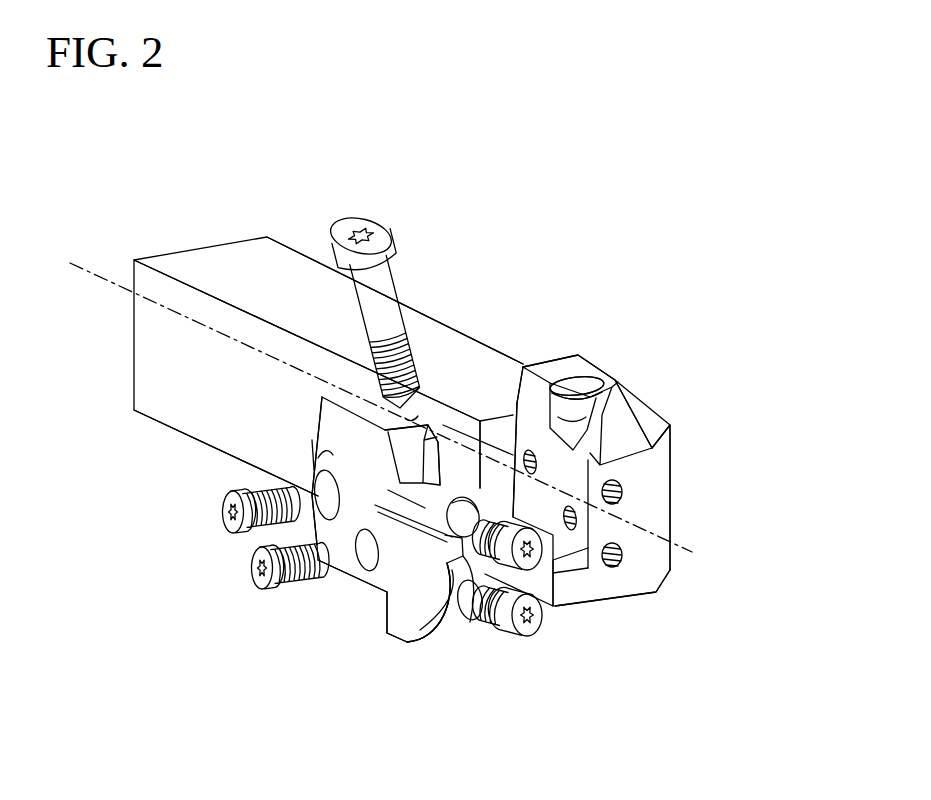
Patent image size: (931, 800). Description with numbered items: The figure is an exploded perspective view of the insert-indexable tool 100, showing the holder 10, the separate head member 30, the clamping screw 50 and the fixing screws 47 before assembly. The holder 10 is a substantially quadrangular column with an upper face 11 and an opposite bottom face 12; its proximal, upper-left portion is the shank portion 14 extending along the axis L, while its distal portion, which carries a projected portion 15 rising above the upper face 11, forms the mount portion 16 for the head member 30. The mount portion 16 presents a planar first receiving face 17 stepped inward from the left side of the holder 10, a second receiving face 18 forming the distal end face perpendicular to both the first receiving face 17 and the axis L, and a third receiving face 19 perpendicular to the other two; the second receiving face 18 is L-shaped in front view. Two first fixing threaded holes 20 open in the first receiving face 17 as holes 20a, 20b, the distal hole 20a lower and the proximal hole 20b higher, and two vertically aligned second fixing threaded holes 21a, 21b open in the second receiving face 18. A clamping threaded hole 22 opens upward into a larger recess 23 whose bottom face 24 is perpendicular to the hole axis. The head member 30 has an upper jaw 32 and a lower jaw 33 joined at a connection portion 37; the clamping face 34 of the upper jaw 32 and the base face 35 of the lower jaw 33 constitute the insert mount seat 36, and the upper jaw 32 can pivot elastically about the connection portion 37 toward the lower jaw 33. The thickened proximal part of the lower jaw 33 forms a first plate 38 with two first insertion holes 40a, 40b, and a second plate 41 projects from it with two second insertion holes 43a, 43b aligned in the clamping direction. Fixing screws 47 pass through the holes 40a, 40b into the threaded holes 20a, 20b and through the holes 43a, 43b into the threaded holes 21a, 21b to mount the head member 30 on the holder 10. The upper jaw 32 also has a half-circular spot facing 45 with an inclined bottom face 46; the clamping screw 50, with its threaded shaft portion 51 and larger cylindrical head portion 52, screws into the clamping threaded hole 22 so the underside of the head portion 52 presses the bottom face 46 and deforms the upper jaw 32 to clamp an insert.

The holder 10 is at (498, 313).
The upper face 11 is at (282, 269).
The bottom face 12 is at (167, 429).
The shank portion 14 is at (432, 300).
The projected portion 15 is at (561, 428).
The mount portion 16 is at (655, 361).
The first receiving face 17 is at (535, 437).
The second receiving face 18 is at (634, 576).
The third receiving face 19 is at (550, 576).
The head portion 20 is at (596, 480).
The first fixing threaded hole 20a is at (565, 521).
The first fixing threaded hole 20b is at (477, 441).
The second fixing threaded hole 21a is at (623, 495).
The second fixing threaded hole 21b is at (615, 569).
The clamping threaded hole 22 is at (525, 364).
The recess 23 is at (618, 373).
The bottom face of the recess 24 is at (586, 380).
The head member 30 is at (355, 619).
The upper jaw 32 is at (313, 399).
The lower jaw 33 is at (412, 643).
The clamping face 34 is at (395, 461).
The base face 35 is at (395, 521).
The insert mount seat 36 is at (305, 457).
The connection portion 37 is at (312, 431).
The first plate 38 is at (337, 578).
The first insertion hole 40a is at (367, 564).
The first insertion hole 40b is at (318, 484).
The second plate 41 is at (443, 631).
The second insertion hole 43a is at (460, 500).
The second insertion hole 43b is at (476, 626).
The spot facing 45 is at (392, 412).
The bottom face of the spot facing 46 is at (415, 413).
The fixing screws 47 is at (222, 521).
The clamping screw 50 is at (389, 255).
The shaft portion 51 is at (368, 351).
The head portion 52 is at (385, 211).
The insert-indexable tool 100 is at (684, 257).
The axis L is at (110, 281).